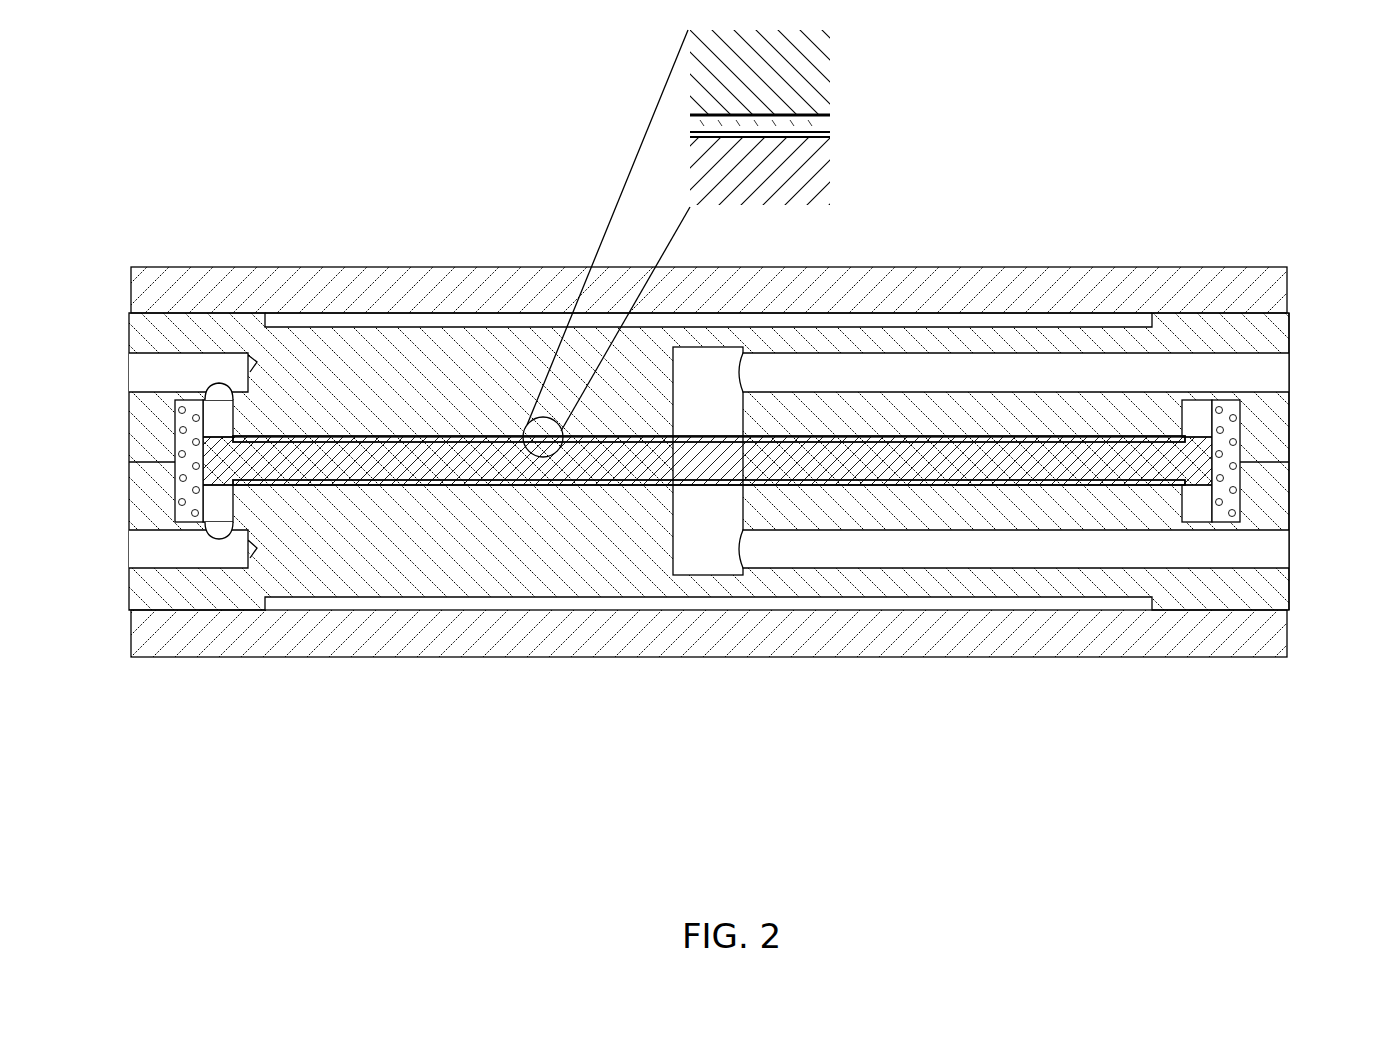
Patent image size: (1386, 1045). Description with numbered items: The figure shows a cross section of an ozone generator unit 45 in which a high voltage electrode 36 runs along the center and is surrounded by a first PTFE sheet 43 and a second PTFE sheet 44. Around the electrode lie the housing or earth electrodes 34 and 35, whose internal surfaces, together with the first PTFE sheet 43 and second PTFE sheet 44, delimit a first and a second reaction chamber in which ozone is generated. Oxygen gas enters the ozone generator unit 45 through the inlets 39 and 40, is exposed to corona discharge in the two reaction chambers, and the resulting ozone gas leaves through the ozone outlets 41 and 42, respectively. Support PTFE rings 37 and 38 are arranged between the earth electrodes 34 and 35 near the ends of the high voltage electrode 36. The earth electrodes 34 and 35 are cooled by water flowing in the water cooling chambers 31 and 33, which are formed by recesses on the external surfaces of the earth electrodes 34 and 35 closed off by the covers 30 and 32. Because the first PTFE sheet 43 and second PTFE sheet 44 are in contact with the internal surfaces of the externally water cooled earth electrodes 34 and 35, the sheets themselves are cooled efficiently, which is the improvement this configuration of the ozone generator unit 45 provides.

The cover 30 is at (851, 285).
The water cooling chamber 31 is at (929, 313).
The cover 32 is at (770, 619).
The water cooling chamber 33 is at (659, 604).
The earth electrode 34 is at (1254, 406).
The earth electrode 35 is at (1253, 491).
The high voltage electrode 36 is at (291, 464).
The support PTFE ring 37 is at (198, 499).
The support PTFE ring 38 is at (1209, 502).
The inlet 39 is at (192, 364).
The inlet 40 is at (153, 553).
The ozone outlet 41 is at (1085, 362).
The ozone outlet 42 is at (1246, 547).
The first PTFE sheet 43 is at (494, 430).
The second PTFE sheet 44 is at (500, 489).
The ozone generator unit 45 is at (1166, 134).